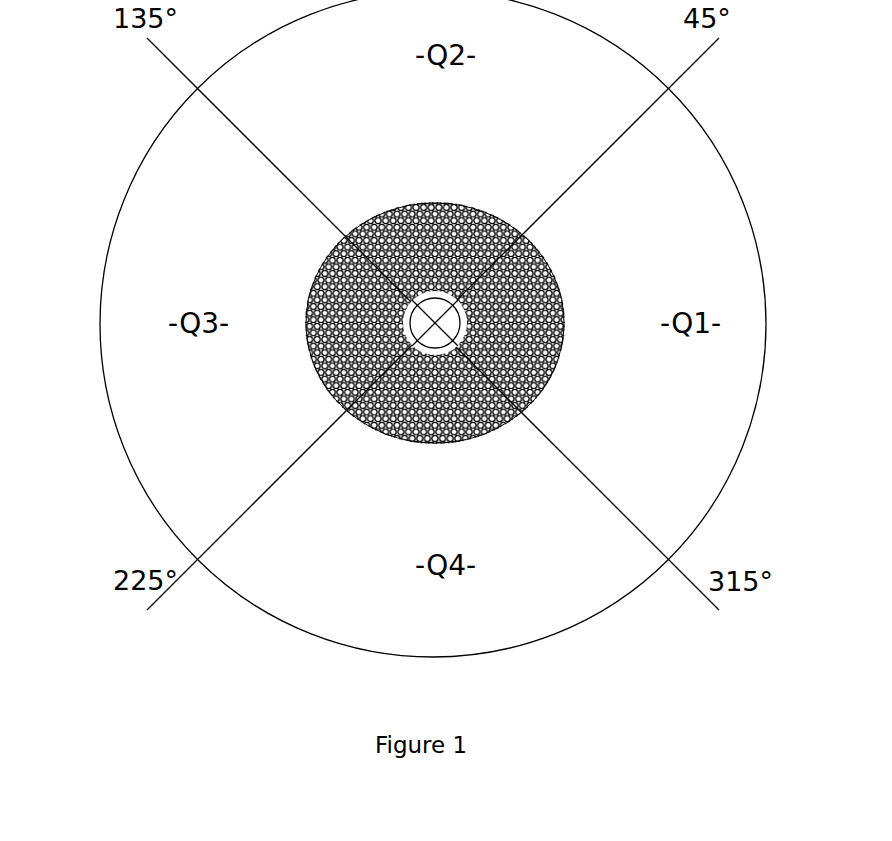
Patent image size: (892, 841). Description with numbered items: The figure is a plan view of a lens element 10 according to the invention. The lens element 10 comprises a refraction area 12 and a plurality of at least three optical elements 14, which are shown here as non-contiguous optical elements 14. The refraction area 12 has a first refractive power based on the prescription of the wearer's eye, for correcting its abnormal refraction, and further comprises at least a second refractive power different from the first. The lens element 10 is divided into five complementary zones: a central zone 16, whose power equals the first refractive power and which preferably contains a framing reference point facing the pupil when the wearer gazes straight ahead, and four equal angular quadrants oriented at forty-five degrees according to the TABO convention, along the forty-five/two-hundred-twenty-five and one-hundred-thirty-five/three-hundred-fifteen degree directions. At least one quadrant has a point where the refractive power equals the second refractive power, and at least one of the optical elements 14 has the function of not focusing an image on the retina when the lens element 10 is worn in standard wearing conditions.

The lens element 10 is at (133, 158).
The refraction area 12 is at (492, 217).
The optical elements 14 is at (555, 283).
The central zone 16 is at (327, 388).